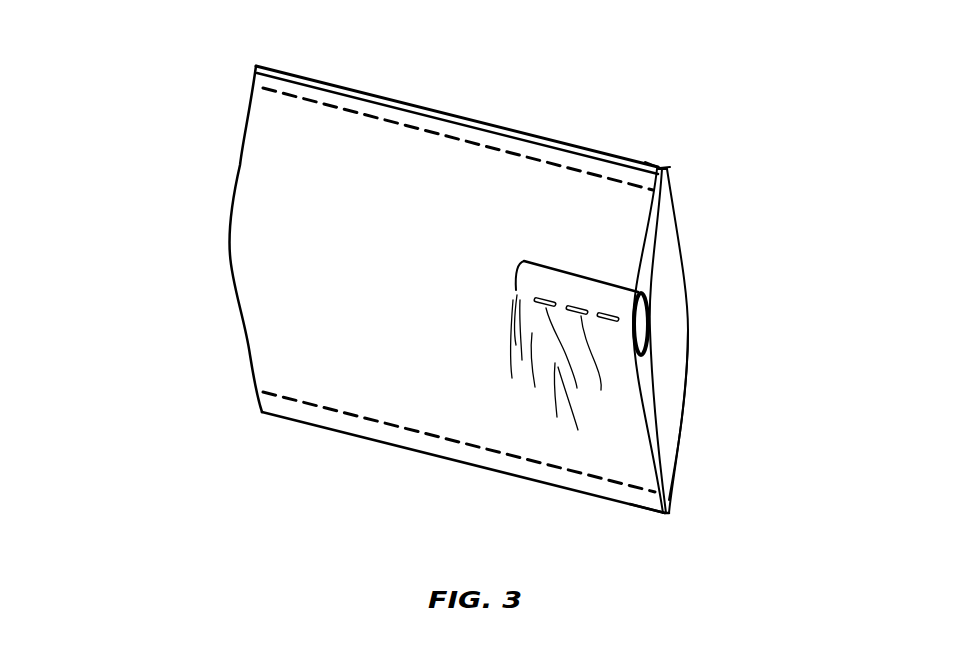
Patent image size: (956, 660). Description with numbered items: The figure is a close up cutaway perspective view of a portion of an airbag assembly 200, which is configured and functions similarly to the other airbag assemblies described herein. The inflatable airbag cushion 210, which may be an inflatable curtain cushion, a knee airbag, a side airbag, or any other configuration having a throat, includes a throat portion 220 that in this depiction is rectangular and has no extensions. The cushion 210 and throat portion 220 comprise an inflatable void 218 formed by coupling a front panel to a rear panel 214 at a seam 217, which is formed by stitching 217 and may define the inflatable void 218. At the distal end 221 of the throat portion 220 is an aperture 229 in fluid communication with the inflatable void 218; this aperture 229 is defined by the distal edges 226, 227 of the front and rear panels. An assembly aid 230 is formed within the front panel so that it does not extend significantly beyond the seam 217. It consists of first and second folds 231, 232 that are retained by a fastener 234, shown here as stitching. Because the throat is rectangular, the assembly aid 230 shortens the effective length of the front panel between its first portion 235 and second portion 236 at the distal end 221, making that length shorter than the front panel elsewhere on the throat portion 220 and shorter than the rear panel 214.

The airbag assembly 200 is at (184, 100).
The inflatable airbag cushion 210 is at (196, 182).
The throat portion 220 is at (250, 248).
The seam 217 is at (426, 130).
The inflatable void 218 is at (445, 158).
The distal end 221 is at (656, 147).
The first portion 235 is at (661, 168).
The rear panel 214 is at (662, 246).
The aperture 229 is at (660, 299).
The distal edge 226 is at (653, 406).
The distal edge 227 is at (687, 430).
The second portion 236 is at (641, 498).
The assembly aid 230 is at (491, 254).
The first fold 231 is at (628, 292).
The fastener 234 is at (576, 363).
The second fold 232 is at (648, 357).